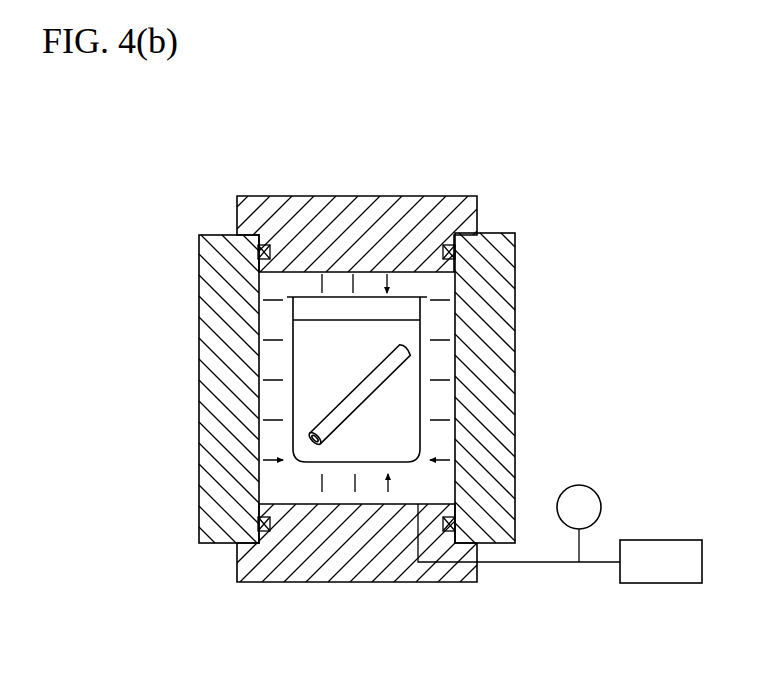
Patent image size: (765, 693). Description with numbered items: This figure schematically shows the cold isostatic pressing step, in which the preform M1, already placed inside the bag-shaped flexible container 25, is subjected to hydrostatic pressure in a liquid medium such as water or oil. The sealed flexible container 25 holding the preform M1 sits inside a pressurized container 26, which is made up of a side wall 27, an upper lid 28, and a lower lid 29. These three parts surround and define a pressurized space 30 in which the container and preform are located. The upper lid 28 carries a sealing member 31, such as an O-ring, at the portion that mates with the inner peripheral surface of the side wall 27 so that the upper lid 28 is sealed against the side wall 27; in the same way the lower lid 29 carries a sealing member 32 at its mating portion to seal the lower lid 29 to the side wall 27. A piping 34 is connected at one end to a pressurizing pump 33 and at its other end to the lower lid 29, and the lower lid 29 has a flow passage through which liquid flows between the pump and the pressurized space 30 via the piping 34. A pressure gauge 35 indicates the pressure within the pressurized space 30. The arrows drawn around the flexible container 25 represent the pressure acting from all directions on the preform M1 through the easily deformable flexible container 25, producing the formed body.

The flexible container 25 is at (405, 405).
The pressurized container 26 is at (392, 389).
The side wall 27 is at (502, 290).
The upper lid 28 is at (353, 216).
The lower lid 29 is at (365, 573).
The pressurized space 30 is at (285, 292).
The sealing member 31 is at (451, 251).
The sealing member 32 is at (265, 535).
The pressurizing pump 33 is at (652, 548).
The piping 34 is at (592, 567).
The pressure gauge 35 is at (588, 487).
The preform M1 is at (405, 350).